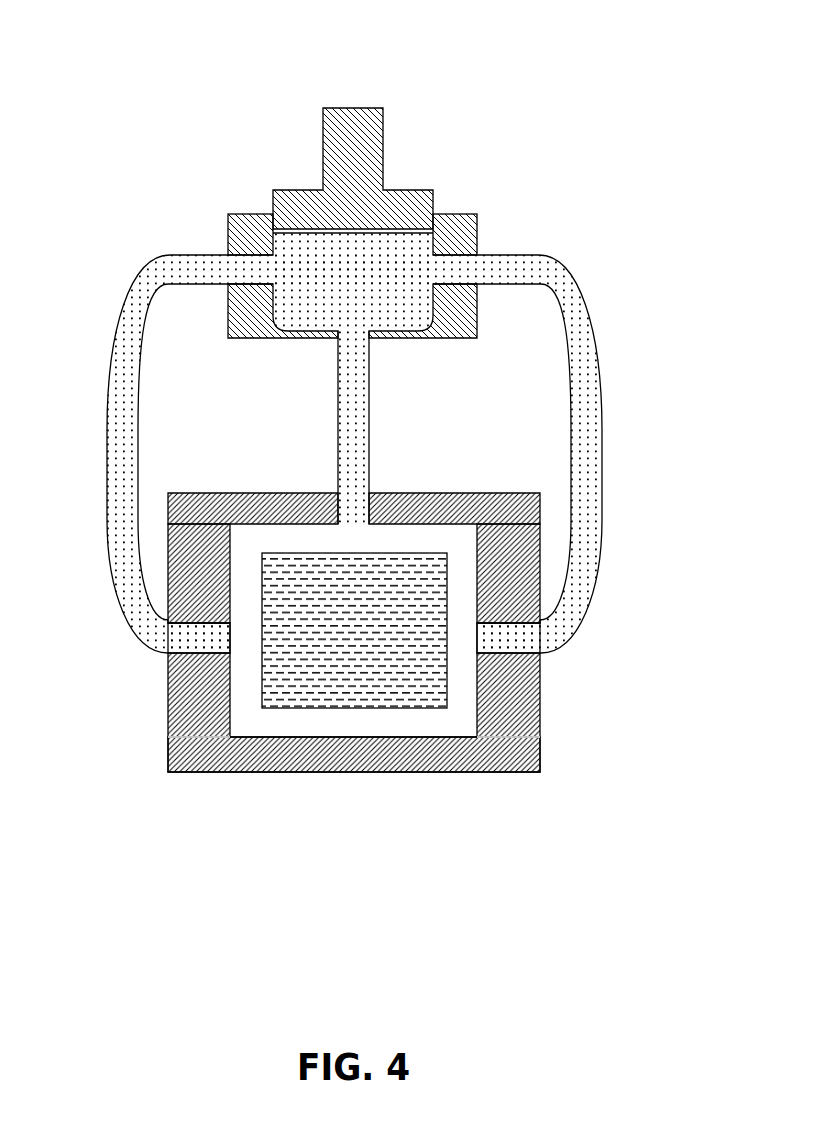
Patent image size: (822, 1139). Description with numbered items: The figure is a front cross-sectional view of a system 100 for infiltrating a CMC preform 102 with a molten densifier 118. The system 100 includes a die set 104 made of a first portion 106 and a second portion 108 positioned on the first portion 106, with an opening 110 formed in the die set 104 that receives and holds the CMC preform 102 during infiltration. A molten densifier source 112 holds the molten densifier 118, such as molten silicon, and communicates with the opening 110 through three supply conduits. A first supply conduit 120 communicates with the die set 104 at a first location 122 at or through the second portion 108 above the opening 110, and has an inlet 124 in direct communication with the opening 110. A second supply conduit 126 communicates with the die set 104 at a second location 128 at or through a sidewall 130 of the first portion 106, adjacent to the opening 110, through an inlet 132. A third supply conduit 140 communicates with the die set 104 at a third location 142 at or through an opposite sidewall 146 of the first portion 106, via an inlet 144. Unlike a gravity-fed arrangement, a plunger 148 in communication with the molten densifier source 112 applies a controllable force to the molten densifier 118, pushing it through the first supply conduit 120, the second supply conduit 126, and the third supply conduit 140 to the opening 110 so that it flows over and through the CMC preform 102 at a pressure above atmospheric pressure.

The system 100 is at (354, 80).
The CMC preform 102 is at (400, 708).
The die set 104 is at (168, 772).
The first portion 106 is at (356, 638).
The second portion 108 is at (182, 493).
The opening 110 is at (258, 738).
The molten densifier source 112 is at (228, 320).
The molten densifier 118 is at (412, 233).
The first supply conduit 120 is at (338, 375).
The first location 122 is at (378, 485).
The inlet 124 is at (348, 533).
The second supply conduit 126 is at (565, 361).
The second location 128 is at (546, 661).
The sidewall 130 is at (547, 757).
The inlet 132 is at (470, 640).
The third supply conduit 140 is at (116, 340).
The third location 142 is at (162, 661).
The inlet 144 is at (240, 644).
The sidewall 146 is at (163, 725).
The plunger 148 is at (323, 128).